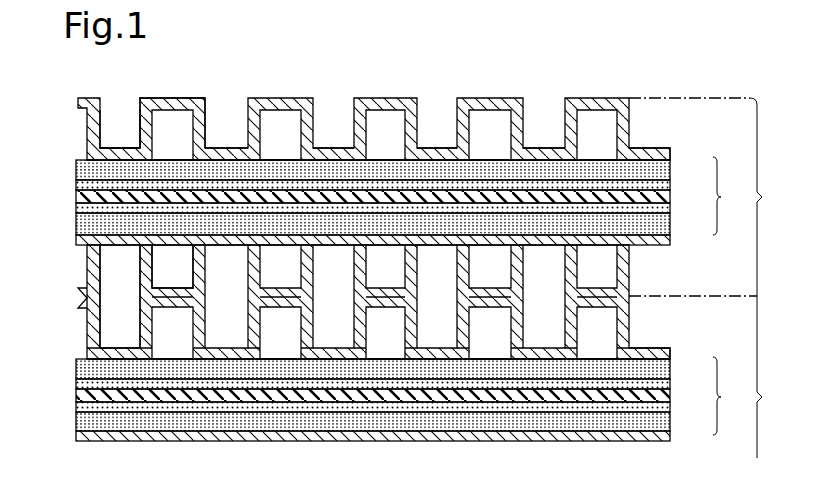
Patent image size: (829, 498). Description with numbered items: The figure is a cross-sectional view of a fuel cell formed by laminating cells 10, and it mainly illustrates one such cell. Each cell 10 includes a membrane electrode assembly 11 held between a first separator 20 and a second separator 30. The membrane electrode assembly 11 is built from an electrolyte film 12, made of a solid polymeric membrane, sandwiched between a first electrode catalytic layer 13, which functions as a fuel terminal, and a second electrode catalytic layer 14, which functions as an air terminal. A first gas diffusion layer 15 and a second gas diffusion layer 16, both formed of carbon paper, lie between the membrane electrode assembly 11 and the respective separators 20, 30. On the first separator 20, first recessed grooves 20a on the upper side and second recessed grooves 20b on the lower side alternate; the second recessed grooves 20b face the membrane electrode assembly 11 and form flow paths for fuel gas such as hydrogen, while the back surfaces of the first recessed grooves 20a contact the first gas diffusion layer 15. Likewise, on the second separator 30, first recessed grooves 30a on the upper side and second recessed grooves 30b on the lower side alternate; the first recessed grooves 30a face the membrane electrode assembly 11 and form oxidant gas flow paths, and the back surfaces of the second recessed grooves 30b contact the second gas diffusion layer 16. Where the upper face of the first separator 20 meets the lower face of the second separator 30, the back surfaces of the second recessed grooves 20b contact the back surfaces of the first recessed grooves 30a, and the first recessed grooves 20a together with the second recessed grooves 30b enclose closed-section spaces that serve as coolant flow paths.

The cell 10 is at (712, 278).
The membrane electrode assembly 11 is at (733, 296).
The electrolyte film 12 is at (664, 197).
The first electrode catalytic layer 13 is at (664, 187).
The second electrode catalytic layer 14 is at (663, 207).
The first gas diffusion layer 15 is at (641, 158).
The second gas diffusion layer 16 is at (646, 243).
The first separator 20 is at (87, 127).
The first recessed groove 20a is at (229, 147).
The second recessed groove 20b is at (281, 110).
The second separator 30 is at (87, 268).
The first recessed groove 30a is at (280, 287).
The second recessed groove 30b is at (223, 248).